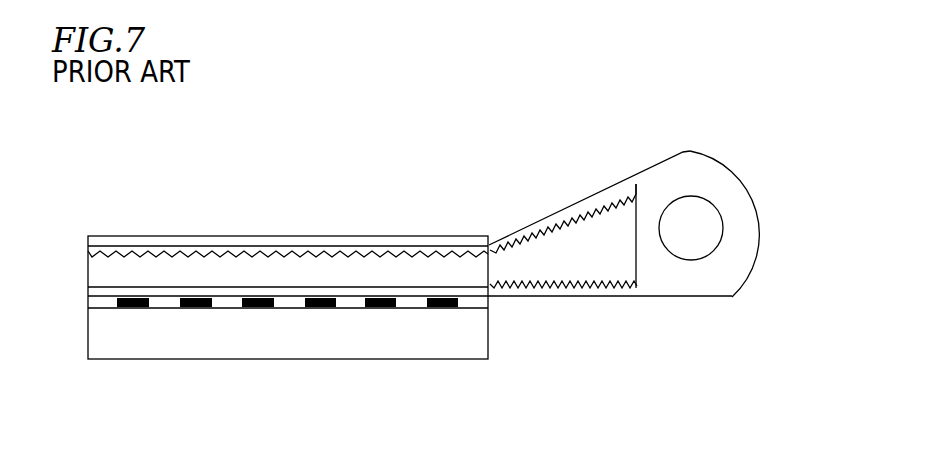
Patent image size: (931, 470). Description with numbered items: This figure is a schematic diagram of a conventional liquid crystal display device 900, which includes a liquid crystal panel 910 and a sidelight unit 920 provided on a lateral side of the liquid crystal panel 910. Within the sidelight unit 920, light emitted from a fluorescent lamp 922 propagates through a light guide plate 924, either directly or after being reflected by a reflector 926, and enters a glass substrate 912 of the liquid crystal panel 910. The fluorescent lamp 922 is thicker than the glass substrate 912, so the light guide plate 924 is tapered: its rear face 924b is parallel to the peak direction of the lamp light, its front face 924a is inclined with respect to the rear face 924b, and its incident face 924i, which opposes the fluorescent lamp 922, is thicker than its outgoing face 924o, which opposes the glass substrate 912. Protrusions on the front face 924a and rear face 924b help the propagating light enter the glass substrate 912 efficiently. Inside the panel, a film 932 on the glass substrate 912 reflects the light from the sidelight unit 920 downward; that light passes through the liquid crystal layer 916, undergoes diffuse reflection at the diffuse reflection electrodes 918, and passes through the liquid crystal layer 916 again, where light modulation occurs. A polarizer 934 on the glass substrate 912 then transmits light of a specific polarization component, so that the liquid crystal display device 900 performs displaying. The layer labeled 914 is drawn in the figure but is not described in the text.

The liquid crystal display device 900 is at (664, 130).
The liquid crystal panel 910 is at (386, 188).
The glass substrate 912 is at (92, 272).
The substrate 914 is at (328, 338).
The liquid crystal layer 916 is at (93, 292).
The diffuse reflection electrodes 918 is at (127, 309).
The sidelight unit 920 is at (559, 172).
The fluorescent lamp 922 is at (707, 237).
The light guide plate 924 is at (527, 270).
The front face 924a is at (568, 202).
The rear face 924b is at (559, 281).
The incident face 924i is at (638, 258).
The outgoing face 924o is at (506, 236).
The reflector 926 is at (713, 160).
The film 932 is at (283, 244).
The polarizer 934 is at (134, 244).